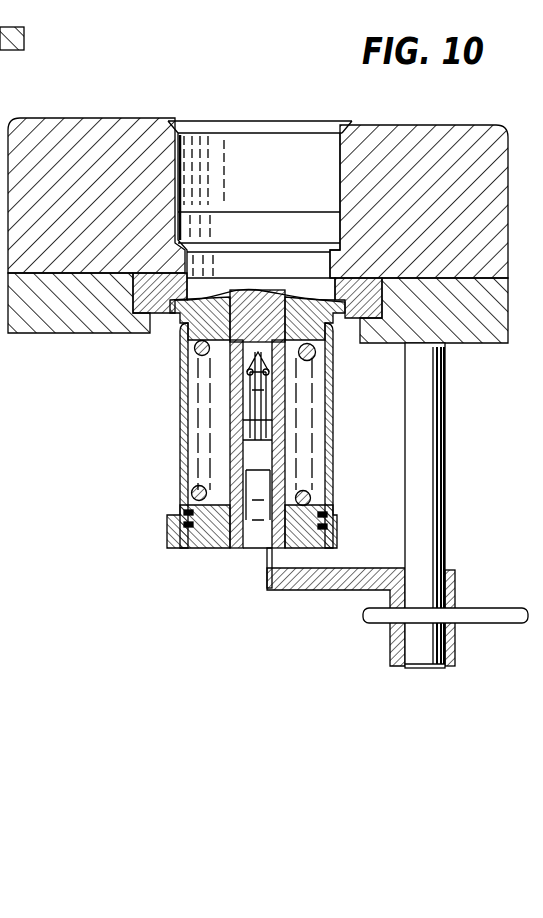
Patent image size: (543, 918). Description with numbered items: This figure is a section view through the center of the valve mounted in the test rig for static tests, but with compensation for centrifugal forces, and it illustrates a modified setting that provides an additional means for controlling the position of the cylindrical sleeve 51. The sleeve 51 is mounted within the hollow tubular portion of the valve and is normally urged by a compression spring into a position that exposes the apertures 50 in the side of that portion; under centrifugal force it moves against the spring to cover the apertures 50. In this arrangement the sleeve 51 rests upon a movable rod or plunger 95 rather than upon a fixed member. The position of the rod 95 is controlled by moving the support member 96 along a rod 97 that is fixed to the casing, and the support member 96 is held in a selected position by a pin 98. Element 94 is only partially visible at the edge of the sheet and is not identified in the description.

The apertures 50 is at (283, 424).
The cylindrical sleeve 51 is at (283, 456).
The plate 94 is at (12, 61).
The movable rod or plunger 95 is at (267, 572).
The support member 96 is at (350, 568).
The rod 97 is at (432, 490).
The pin 98 is at (486, 616).